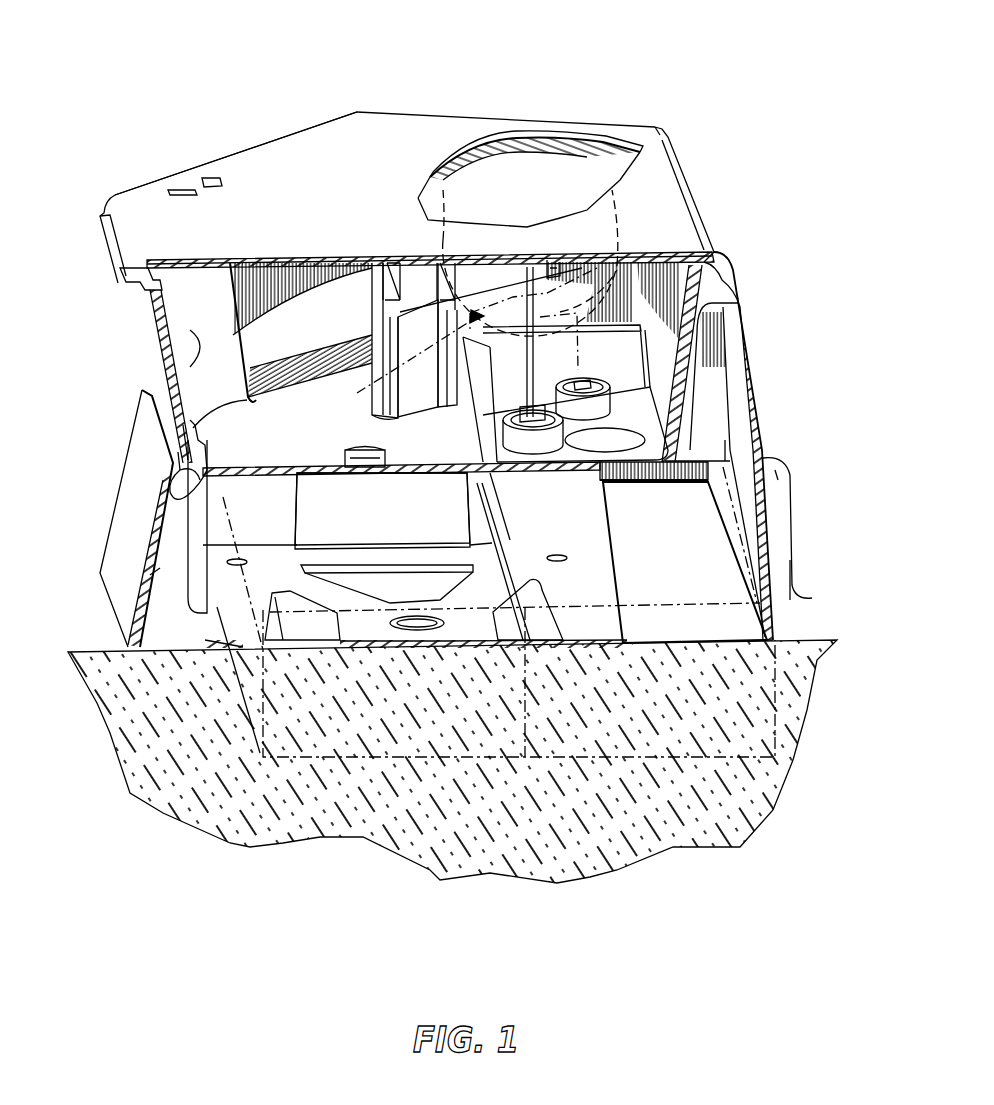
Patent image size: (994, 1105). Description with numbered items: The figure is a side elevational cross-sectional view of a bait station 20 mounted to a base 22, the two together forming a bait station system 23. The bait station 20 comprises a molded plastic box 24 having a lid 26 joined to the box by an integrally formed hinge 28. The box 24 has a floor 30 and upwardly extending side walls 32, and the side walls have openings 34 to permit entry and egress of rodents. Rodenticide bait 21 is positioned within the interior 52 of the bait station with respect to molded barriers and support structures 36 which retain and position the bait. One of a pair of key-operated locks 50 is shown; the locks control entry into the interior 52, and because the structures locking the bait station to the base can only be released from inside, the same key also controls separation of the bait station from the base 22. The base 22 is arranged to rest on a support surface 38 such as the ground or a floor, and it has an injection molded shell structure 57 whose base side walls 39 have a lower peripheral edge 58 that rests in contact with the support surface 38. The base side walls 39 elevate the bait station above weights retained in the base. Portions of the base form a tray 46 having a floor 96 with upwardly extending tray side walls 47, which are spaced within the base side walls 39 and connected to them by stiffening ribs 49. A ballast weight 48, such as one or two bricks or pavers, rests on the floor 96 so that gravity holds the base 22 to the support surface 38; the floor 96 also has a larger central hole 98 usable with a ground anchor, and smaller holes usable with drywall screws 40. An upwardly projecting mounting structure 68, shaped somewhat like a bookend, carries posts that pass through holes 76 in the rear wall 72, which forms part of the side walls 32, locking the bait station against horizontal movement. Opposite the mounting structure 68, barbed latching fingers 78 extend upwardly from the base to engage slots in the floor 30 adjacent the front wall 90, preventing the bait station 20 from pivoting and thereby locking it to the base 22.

The bait station 20 is at (548, 92).
The rodenticide bait 21 is at (376, 386).
The base 22 is at (132, 450).
The bait station system 23 is at (168, 82).
The molded plastic box 24 is at (223, 345).
The lid 26 is at (420, 128).
The hinge 28 is at (662, 140).
The floor 30 is at (323, 477).
The side walls 32 is at (152, 334).
The openings 34 is at (478, 175).
The barriers and support structures 36 is at (545, 392).
The support surface 38 is at (790, 600).
The base side walls 39 is at (154, 489).
The drywall screws 40 is at (235, 553).
The tray 46 is at (617, 587).
The tray side walls 47 is at (253, 596).
The ballast weight 48 is at (317, 758).
The stiffening ribs 49 is at (160, 570).
The locks 50 is at (212, 180).
The interior 52 is at (262, 362).
The shell structure 57 is at (766, 500).
The lower peripheral edge 58 is at (143, 585).
The mounting structure 68 is at (750, 345).
The rear wall 72 is at (690, 393).
The holes 76 is at (722, 273).
The barbed latching fingers 78 is at (252, 397).
The front wall 90 is at (152, 370).
The floor 96 is at (597, 590).
The central hole 98 is at (440, 605).